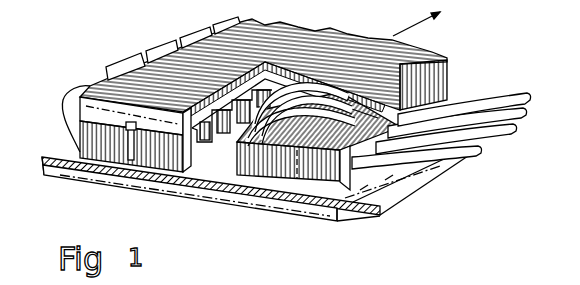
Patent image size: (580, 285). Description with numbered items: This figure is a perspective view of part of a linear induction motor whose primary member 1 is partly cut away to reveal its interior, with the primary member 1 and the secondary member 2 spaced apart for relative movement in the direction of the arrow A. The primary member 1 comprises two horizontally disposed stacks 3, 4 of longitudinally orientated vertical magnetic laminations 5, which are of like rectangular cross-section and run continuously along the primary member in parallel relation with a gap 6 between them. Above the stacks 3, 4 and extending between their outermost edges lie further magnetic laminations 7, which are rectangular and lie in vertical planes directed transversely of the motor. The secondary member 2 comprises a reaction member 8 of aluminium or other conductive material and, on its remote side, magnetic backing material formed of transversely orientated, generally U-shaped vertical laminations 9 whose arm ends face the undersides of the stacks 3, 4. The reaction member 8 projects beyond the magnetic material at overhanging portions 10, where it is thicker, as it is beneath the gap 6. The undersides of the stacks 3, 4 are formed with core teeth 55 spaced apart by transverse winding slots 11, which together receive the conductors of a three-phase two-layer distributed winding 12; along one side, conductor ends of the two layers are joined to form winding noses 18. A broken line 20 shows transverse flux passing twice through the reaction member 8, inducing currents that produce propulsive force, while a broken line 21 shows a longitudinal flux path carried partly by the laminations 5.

The primary member 1 is at (130, 60).
The secondary member 2 is at (240, 208).
The stack 3 is at (84, 160).
The stack 4 is at (297, 180).
The magnetic laminations 5 is at (128, 168).
The gap 6 is at (223, 172).
The further magnetic laminations 7 is at (210, 50).
The reaction member 8 is at (68, 139).
The magnetic laminations 9 is at (337, 212).
The overhanging portions 10 is at (47, 168).
The transverse winding slots 11 is at (410, 166).
The three-phase two-layer distributed winding 12 is at (476, 164).
The winding noses 18 is at (482, 128).
The broken line 20 is at (133, 178).
The broken line 21 is at (410, 178).
The core teeth 55 is at (440, 70).